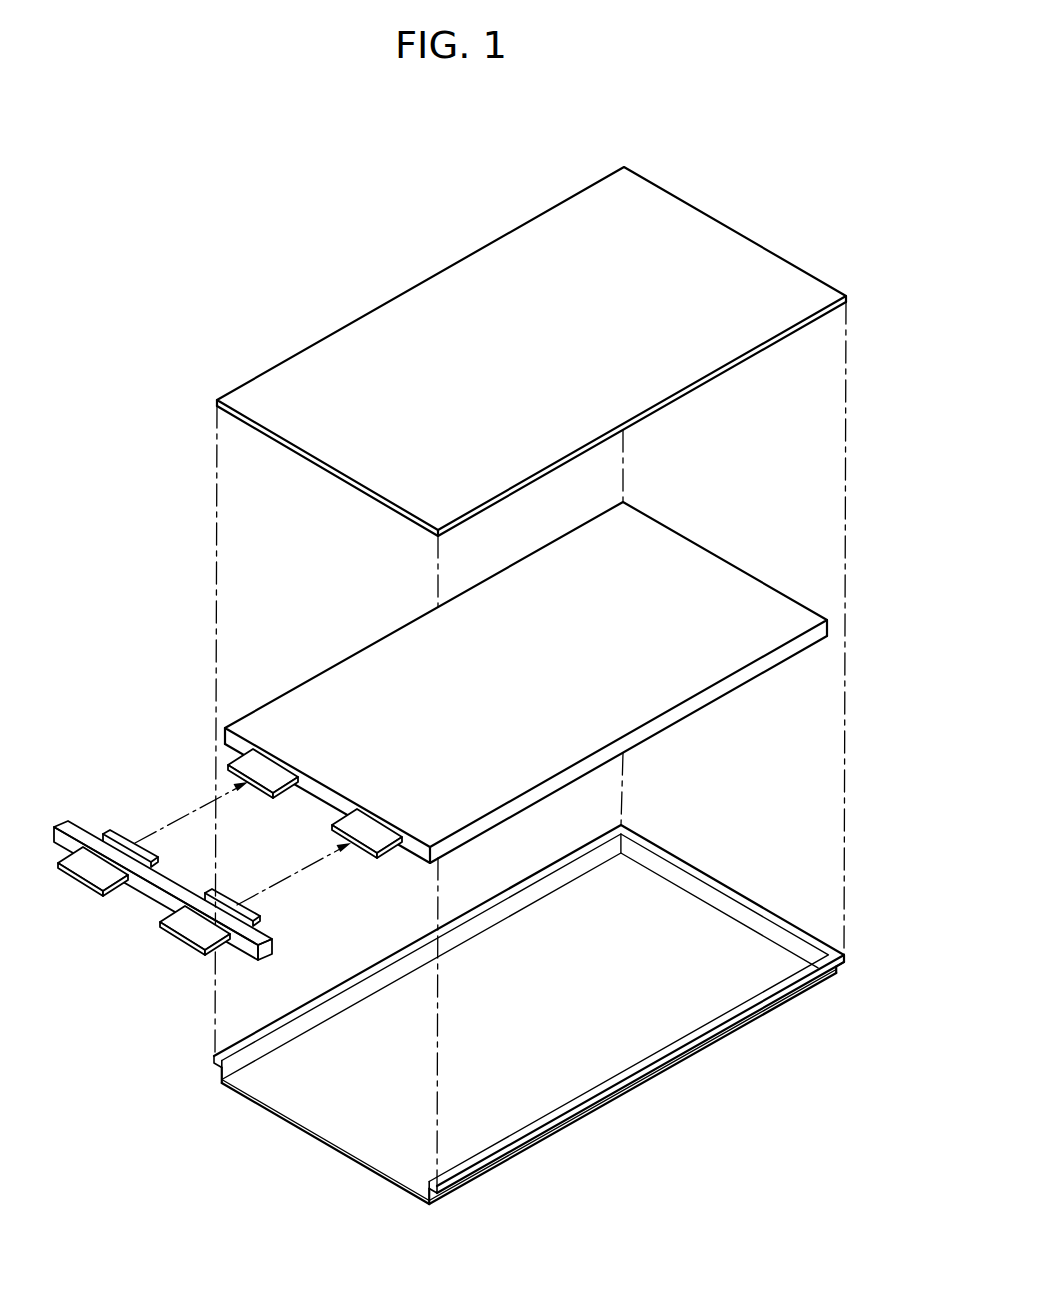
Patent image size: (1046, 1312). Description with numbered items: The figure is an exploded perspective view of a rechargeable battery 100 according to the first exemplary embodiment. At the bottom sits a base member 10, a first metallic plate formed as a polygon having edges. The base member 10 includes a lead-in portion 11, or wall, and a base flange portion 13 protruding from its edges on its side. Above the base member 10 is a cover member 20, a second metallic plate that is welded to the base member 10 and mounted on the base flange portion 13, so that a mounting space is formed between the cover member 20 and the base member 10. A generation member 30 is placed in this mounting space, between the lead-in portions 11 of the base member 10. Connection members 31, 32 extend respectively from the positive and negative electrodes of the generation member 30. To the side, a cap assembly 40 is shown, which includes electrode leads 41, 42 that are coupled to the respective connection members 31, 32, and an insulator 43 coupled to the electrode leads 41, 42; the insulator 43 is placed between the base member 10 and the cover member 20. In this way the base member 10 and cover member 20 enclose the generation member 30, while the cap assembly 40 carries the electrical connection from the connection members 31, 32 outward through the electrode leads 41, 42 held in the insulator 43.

The rechargeable battery 100 is at (270, 222).
The base member 10 is at (362, 948).
The lead-in portion 11 is at (246, 1059).
The base flange portion 13 is at (287, 1023).
The cover member 20 is at (300, 317).
The generation member 30 is at (320, 638).
The connection member 31 is at (283, 798).
The connection member 32 is at (385, 858).
The cap assembly 40 is at (121, 925).
The electrode lead 41 is at (80, 879).
The electrode lead 42 is at (186, 940).
The insulator 43 is at (85, 827).